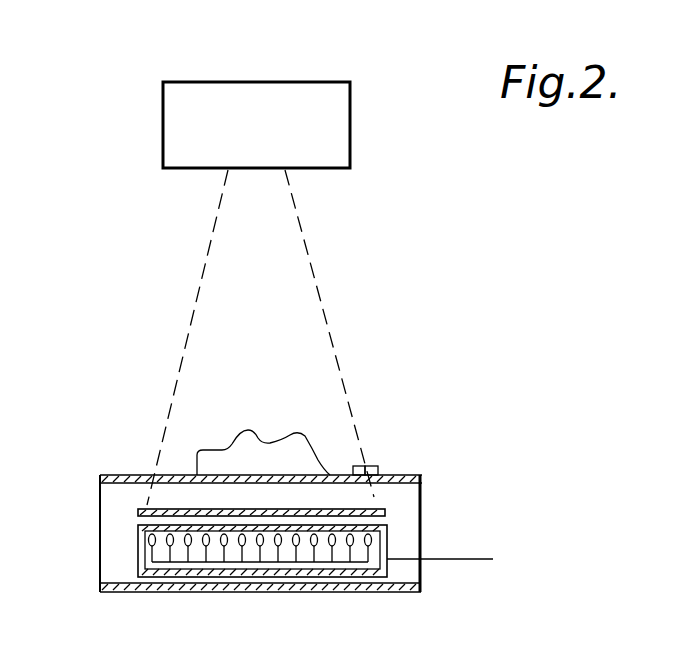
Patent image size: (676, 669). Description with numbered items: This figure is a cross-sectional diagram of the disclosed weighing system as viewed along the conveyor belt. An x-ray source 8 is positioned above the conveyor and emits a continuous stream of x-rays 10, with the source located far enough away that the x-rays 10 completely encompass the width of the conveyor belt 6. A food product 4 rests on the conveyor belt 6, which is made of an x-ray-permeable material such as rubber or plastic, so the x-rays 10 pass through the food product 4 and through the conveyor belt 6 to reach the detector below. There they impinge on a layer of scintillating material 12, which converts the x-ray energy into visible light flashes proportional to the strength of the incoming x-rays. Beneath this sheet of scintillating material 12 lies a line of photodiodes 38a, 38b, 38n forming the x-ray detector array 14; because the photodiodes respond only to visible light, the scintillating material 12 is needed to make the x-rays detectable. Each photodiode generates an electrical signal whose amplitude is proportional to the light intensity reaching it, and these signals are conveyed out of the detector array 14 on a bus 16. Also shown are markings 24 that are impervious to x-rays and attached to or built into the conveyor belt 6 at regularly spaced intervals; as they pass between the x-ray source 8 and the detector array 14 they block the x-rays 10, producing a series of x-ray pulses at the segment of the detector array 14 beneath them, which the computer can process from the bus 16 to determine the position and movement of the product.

The x-ray source 8 is at (255, 82).
The x-rays 10 is at (311, 274).
The conveyor belt 6 is at (128, 475).
The food product 4 is at (245, 440).
The markings 24 is at (372, 465).
The scintillating material 12 is at (138, 512).
The x-ray detector array 14 is at (256, 578).
The photodiode 38a is at (152, 555).
The photodiode 38b is at (168, 558).
The photodiode 38n is at (372, 540).
The bus 16 is at (465, 560).